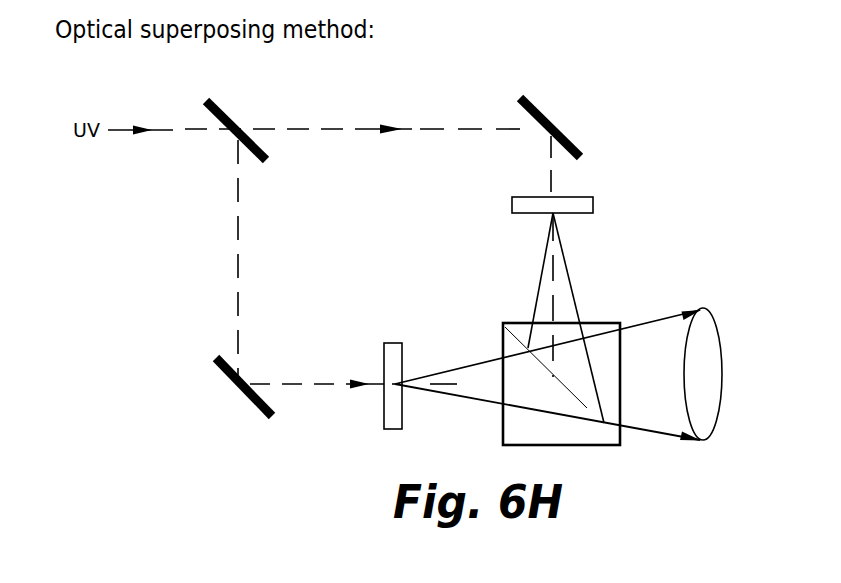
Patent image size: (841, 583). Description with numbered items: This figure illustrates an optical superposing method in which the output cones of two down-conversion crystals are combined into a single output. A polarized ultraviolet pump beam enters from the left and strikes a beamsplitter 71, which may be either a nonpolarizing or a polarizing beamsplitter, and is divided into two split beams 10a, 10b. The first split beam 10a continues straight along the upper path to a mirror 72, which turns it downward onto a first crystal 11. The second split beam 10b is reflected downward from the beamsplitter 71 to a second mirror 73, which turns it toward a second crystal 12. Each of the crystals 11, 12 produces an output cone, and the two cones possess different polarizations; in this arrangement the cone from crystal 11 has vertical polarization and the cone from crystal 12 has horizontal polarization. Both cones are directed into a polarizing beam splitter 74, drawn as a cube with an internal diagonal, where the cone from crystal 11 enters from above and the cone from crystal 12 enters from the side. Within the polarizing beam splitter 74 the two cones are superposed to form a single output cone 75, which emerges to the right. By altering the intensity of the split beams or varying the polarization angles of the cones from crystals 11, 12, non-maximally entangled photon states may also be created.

The split beam 10a is at (351, 126).
The split beam 10b is at (237, 247).
The crystal 11 is at (511, 203).
The crystal 12 is at (383, 351).
The beamsplitter 71 is at (267, 167).
The mirror 72 is at (548, 119).
The mirror 73 is at (232, 387).
The polarizing beam splitter 74 is at (594, 323).
The output cone 75 is at (701, 310).